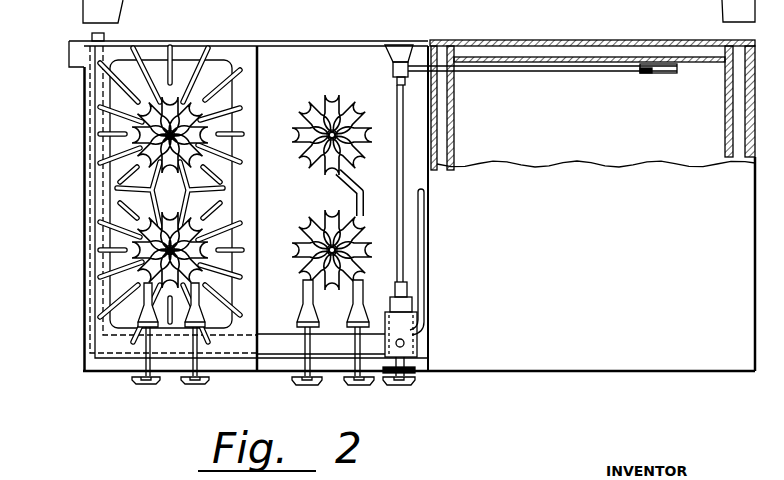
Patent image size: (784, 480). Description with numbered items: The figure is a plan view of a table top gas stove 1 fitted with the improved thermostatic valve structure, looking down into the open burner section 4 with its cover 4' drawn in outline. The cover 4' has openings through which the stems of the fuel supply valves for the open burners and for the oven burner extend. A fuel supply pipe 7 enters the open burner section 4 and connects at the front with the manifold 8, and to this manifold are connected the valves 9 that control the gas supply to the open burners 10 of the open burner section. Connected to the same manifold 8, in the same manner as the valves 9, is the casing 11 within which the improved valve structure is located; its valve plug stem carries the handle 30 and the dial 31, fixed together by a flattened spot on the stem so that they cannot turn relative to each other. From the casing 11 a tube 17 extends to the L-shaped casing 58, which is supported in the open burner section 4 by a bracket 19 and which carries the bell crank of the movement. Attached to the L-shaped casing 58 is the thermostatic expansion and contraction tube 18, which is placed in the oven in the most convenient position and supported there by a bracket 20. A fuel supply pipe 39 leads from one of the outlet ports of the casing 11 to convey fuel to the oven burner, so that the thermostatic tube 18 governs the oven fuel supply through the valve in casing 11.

The gas stove 1 is at (84, 206).
The open burner section 4 is at (143, 194).
The cover 4' is at (153, 230).
The fuel supply pipe 7 is at (92, 37).
The manifold 8 is at (282, 356).
The valves 9 is at (148, 386).
The open burners 10 is at (310, 143).
The casing 11 is at (412, 361).
The tube 17 is at (397, 172).
The thermostatic expansion and contraction tube 18 is at (546, 72).
The bracket 19 is at (391, 55).
The bracket 20 is at (650, 75).
The handle 30 is at (399, 386).
The dial 31 is at (413, 374).
The fuel supply pipe 39 is at (424, 298).
The L-shaped casing 58 is at (393, 72).